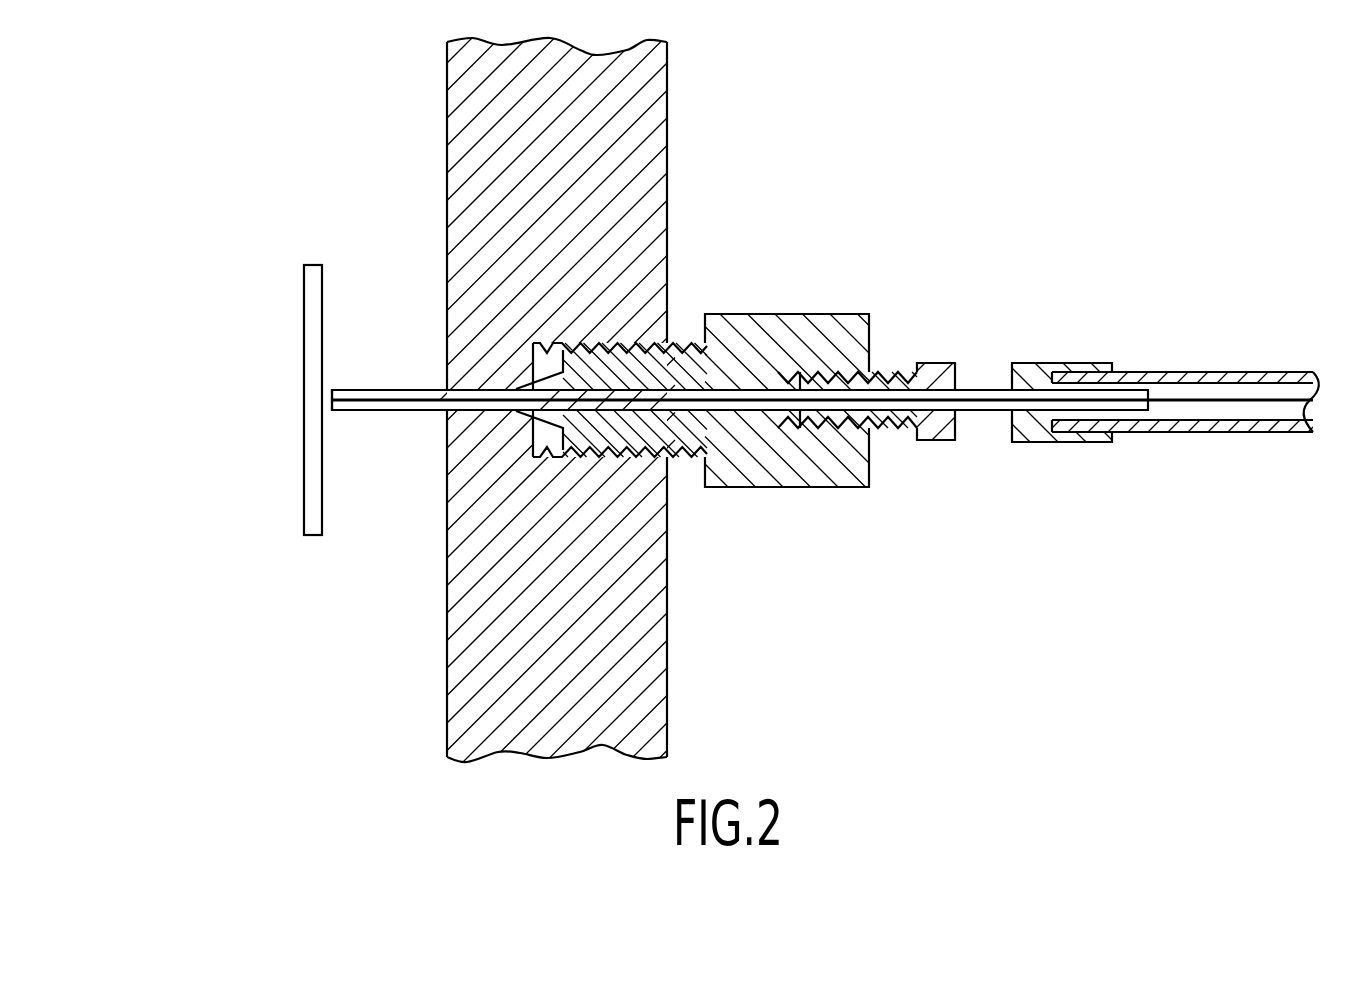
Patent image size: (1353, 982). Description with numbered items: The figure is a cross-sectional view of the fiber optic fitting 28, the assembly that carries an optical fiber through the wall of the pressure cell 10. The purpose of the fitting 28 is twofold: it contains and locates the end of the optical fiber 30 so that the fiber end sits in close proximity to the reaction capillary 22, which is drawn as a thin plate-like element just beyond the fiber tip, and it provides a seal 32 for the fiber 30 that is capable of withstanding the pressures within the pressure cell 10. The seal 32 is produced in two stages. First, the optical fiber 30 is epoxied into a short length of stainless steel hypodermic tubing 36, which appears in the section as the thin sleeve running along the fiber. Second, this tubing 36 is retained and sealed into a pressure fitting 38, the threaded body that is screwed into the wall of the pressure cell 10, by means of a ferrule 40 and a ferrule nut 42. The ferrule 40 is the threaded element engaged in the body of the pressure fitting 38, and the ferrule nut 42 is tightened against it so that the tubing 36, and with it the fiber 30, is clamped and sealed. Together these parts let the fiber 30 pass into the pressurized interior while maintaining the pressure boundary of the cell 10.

The pressure cell 10 is at (447, 164).
The reaction capillary 22 is at (303, 272).
The fiber optic fitting 28 is at (1012, 475).
The optical fiber 30 is at (353, 410).
The seal 32 is at (393, 410).
The stainless steel hypodermic tubing 36 is at (430, 410).
The pressure fitting 38 is at (679, 345).
The ferrule 40 is at (782, 390).
The ferrule nut 42 is at (873, 383).